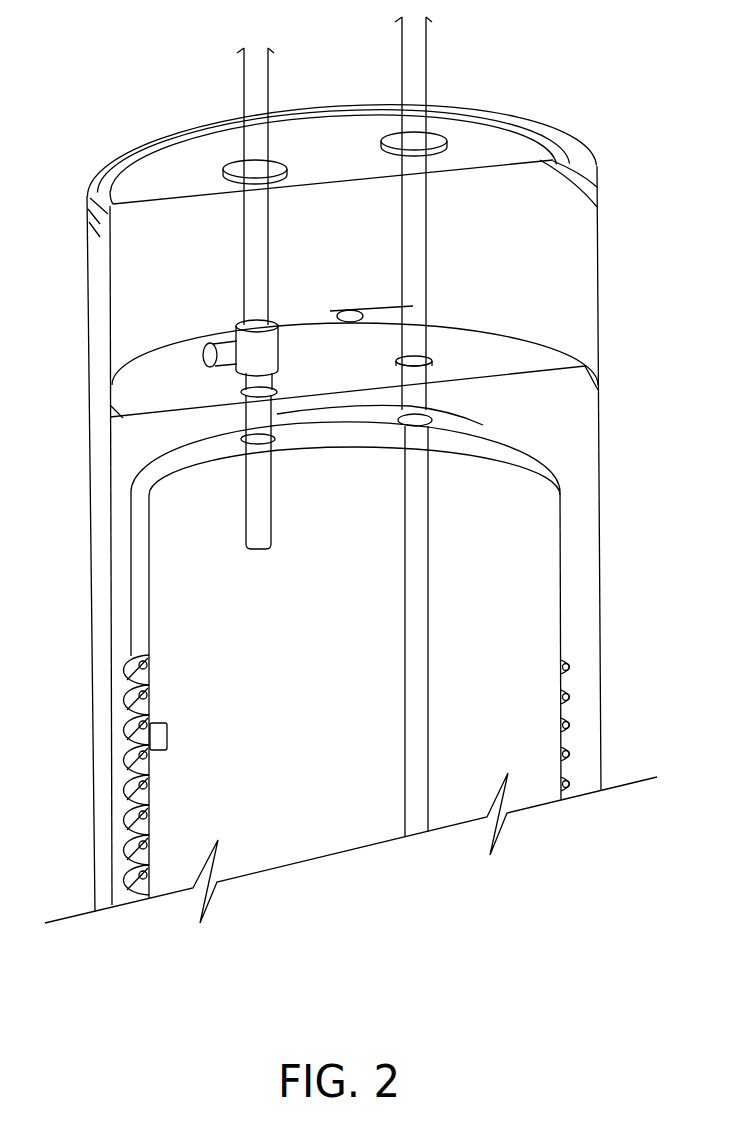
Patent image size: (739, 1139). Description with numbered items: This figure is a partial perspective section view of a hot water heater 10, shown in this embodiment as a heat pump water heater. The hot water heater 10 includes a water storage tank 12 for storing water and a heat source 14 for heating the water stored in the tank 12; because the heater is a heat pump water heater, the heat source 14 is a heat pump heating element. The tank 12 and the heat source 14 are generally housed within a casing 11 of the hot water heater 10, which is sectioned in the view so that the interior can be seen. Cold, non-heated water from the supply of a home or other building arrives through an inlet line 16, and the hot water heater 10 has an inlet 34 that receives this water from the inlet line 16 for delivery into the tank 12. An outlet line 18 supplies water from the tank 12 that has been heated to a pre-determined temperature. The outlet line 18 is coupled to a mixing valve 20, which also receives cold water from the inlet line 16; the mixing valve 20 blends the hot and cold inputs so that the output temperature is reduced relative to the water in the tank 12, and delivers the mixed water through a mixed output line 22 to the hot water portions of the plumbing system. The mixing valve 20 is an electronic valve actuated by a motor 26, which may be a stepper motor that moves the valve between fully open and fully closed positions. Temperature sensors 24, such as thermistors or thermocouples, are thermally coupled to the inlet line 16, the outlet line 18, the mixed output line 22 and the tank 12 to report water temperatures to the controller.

The hot water heater 10 is at (602, 80).
The casing 11 is at (601, 469).
The water storage tank 12 is at (345, 744).
The heat source 14 is at (575, 707).
The inlet line 16 is at (427, 50).
The outlet line 18 is at (257, 492).
The mixing valve 20 is at (286, 359).
The mixed output line 22 is at (267, 239).
The temperature sensor 24 is at (345, 310).
The motor 26 is at (225, 367).
The inlet 34 is at (437, 140).